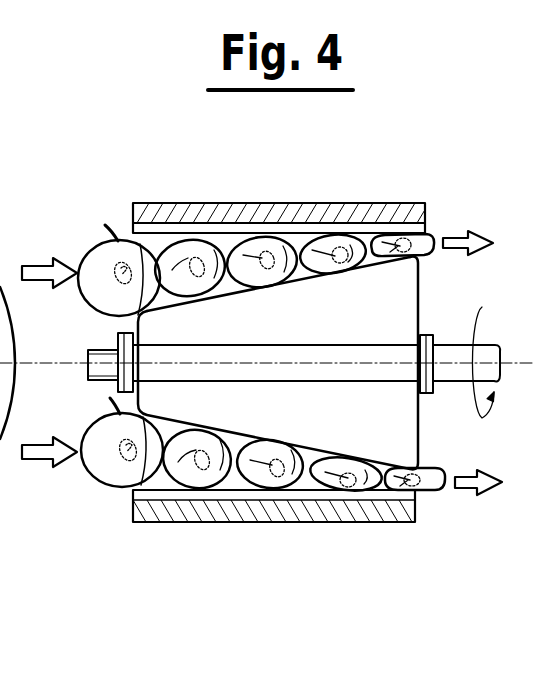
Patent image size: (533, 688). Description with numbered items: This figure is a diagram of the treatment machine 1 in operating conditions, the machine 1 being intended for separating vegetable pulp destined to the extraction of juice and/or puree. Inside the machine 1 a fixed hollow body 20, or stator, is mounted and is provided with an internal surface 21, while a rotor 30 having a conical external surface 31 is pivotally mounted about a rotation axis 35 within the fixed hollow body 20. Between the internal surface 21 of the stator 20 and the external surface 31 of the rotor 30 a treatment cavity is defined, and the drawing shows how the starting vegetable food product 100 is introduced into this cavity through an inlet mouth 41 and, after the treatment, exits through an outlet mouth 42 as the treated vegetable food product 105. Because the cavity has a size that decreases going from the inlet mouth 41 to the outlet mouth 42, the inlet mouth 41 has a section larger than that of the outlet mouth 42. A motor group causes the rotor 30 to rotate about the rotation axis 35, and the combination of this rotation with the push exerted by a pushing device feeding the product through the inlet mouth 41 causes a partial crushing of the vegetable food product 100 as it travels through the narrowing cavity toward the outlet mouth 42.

The machine 1 is at (415, 572).
The fixed hollow body 20 is at (429, 198).
The internal surface 21 is at (140, 240).
The rotor 30 is at (440, 278).
The external surface 31 is at (401, 293).
The rotation axis 35 is at (448, 371).
The inlet mouth 41 is at (90, 240).
The outlet mouth 42 is at (433, 233).
The starting vegetable food product 100 is at (92, 417).
The treated vegetable food product 105 is at (447, 468).